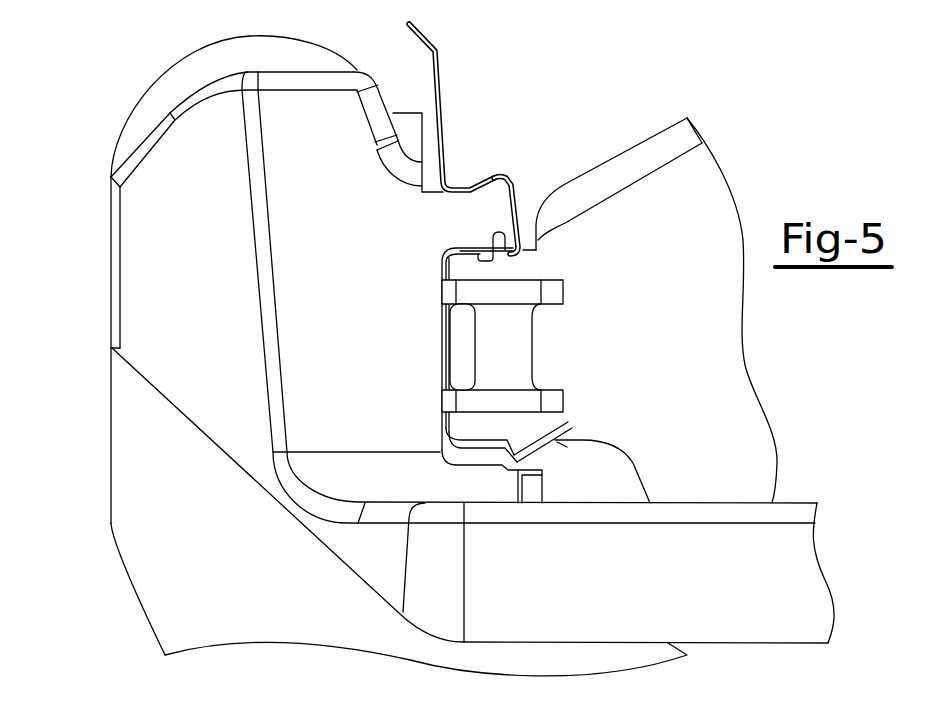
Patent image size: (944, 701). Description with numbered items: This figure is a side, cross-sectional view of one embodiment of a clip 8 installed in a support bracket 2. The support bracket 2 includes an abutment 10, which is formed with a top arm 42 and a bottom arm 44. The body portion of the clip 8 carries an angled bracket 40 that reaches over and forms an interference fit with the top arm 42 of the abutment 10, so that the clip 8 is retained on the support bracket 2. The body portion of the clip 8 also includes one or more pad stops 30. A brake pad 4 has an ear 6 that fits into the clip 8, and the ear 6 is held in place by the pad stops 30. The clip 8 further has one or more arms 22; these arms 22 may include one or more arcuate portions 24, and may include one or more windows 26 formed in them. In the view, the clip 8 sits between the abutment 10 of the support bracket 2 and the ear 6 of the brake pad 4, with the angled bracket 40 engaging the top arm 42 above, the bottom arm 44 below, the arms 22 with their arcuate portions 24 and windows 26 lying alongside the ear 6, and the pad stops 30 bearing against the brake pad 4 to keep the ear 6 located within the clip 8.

The support bracket 2 is at (92, 238).
The brake pad 4 is at (742, 435).
The ear 6 is at (520, 268).
The clip 8 is at (478, 77).
The abutment 10 is at (440, 343).
The arms 22 is at (512, 341).
The arcuate portions 24 is at (545, 426).
The windows 26 is at (547, 362).
The pad stops 30 is at (495, 232).
The angled bracket 40 is at (516, 182).
The top arm 42 is at (478, 212).
The bottom arm 44 is at (530, 485).